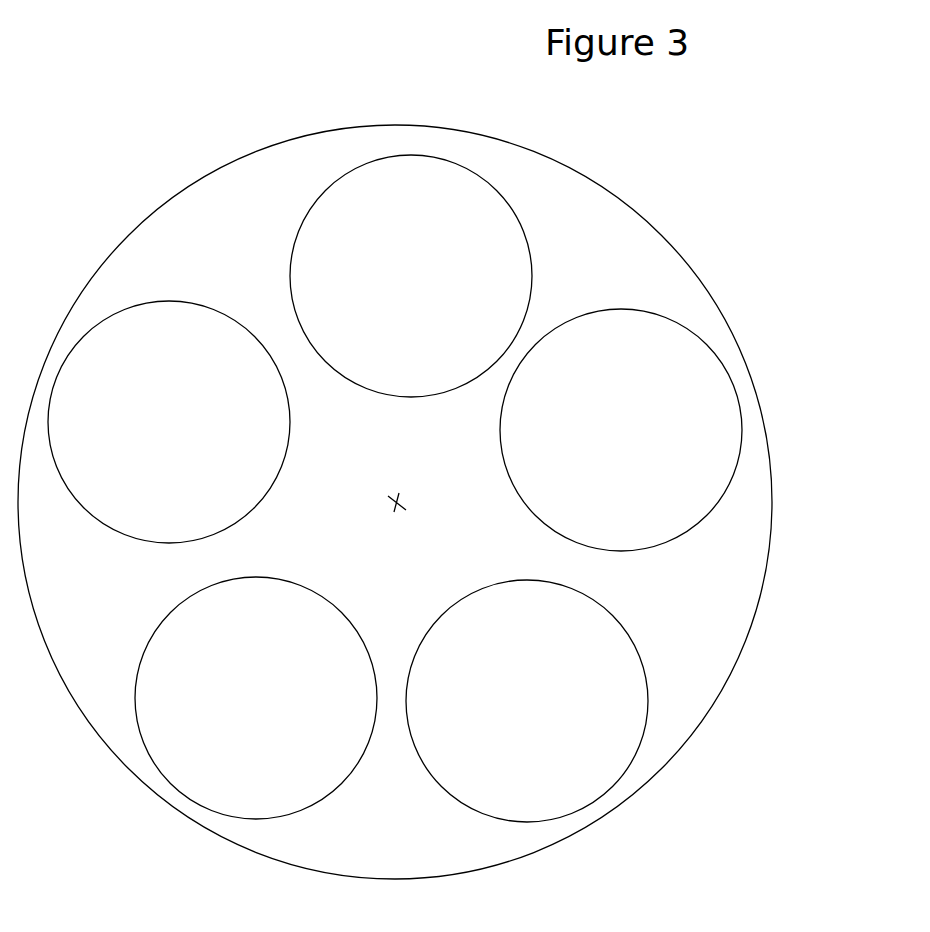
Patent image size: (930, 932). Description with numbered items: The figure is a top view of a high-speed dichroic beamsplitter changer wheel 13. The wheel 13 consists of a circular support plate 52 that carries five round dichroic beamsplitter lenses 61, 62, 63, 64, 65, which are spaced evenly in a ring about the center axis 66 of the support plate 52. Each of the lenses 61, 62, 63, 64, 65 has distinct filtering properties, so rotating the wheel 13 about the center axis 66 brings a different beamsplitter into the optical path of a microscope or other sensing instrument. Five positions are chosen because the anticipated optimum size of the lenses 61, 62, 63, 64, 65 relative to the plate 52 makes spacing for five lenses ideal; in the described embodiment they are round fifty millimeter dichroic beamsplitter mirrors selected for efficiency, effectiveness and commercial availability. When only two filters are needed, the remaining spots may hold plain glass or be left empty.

The dichroic beamsplitter changer wheel 13 is at (212, 142).
The support plate 52 is at (166, 267).
The dichroic beamsplitter lens 61 is at (122, 370).
The dichroic beamsplitter lens 62 is at (364, 225).
The dichroic beamsplitter lens 63 is at (572, 378).
The dichroic beamsplitter lens 64 is at (481, 648).
The dichroic beamsplitter lens 65 is at (210, 645).
The center axis 66 is at (403, 510).